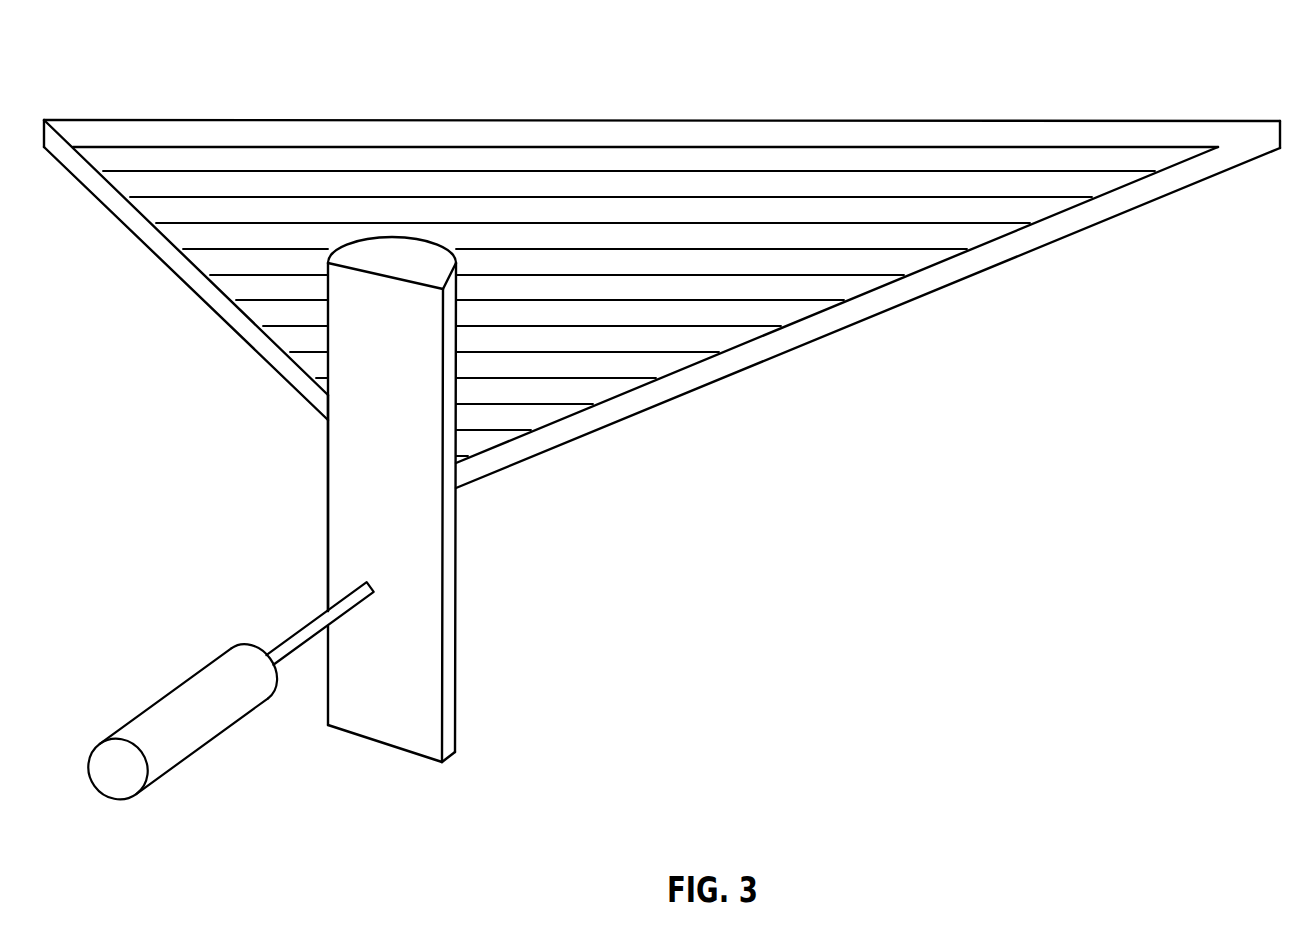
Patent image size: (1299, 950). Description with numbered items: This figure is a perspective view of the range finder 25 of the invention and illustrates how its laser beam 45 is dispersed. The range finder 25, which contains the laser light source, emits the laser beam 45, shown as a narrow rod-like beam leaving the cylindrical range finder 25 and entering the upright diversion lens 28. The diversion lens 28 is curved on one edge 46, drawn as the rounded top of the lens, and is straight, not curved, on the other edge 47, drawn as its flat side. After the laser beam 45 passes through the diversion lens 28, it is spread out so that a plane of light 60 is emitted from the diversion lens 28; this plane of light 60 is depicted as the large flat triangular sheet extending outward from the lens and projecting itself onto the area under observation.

The range finder 25 is at (207, 750).
The diversion lens 28 is at (457, 622).
The laser beam 45 is at (312, 620).
The curved edge of diversion lens 46 is at (390, 237).
The straight edge of diversion lens 47 is at (325, 492).
The plane of light 60 is at (702, 121).